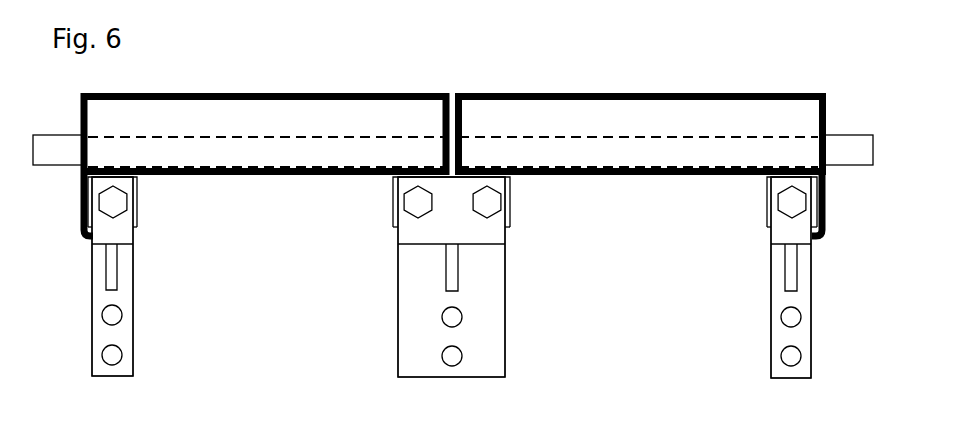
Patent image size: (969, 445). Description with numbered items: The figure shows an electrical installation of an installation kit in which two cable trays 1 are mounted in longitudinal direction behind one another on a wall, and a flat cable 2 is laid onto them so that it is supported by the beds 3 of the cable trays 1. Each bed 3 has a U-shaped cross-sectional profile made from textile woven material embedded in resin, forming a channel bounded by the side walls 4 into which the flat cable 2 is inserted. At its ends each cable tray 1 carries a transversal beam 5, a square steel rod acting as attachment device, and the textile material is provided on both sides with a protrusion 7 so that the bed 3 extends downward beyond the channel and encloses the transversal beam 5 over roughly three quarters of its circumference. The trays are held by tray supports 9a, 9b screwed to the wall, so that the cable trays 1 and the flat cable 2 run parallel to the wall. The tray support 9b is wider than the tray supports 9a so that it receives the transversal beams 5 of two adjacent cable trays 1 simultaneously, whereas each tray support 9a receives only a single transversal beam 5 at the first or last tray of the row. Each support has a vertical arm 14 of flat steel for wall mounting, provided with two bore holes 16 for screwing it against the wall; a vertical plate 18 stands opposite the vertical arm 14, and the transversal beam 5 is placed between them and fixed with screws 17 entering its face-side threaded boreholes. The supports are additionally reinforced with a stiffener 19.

The cable tray 1 is at (453, 115).
The flat cable 2 is at (56, 142).
The bed 3 is at (253, 177).
The side walls 4 is at (340, 93).
The transversal beam 5 is at (140, 192).
The protrusion 7 is at (78, 207).
The tray support 9a is at (80, 306).
The tray support 9b is at (378, 303).
The vertical arm 14 is at (126, 371).
The bore holes 16 is at (122, 313).
The screws 17 is at (119, 206).
The vertical plate 18 is at (120, 232).
The stiffener 19 is at (113, 272).